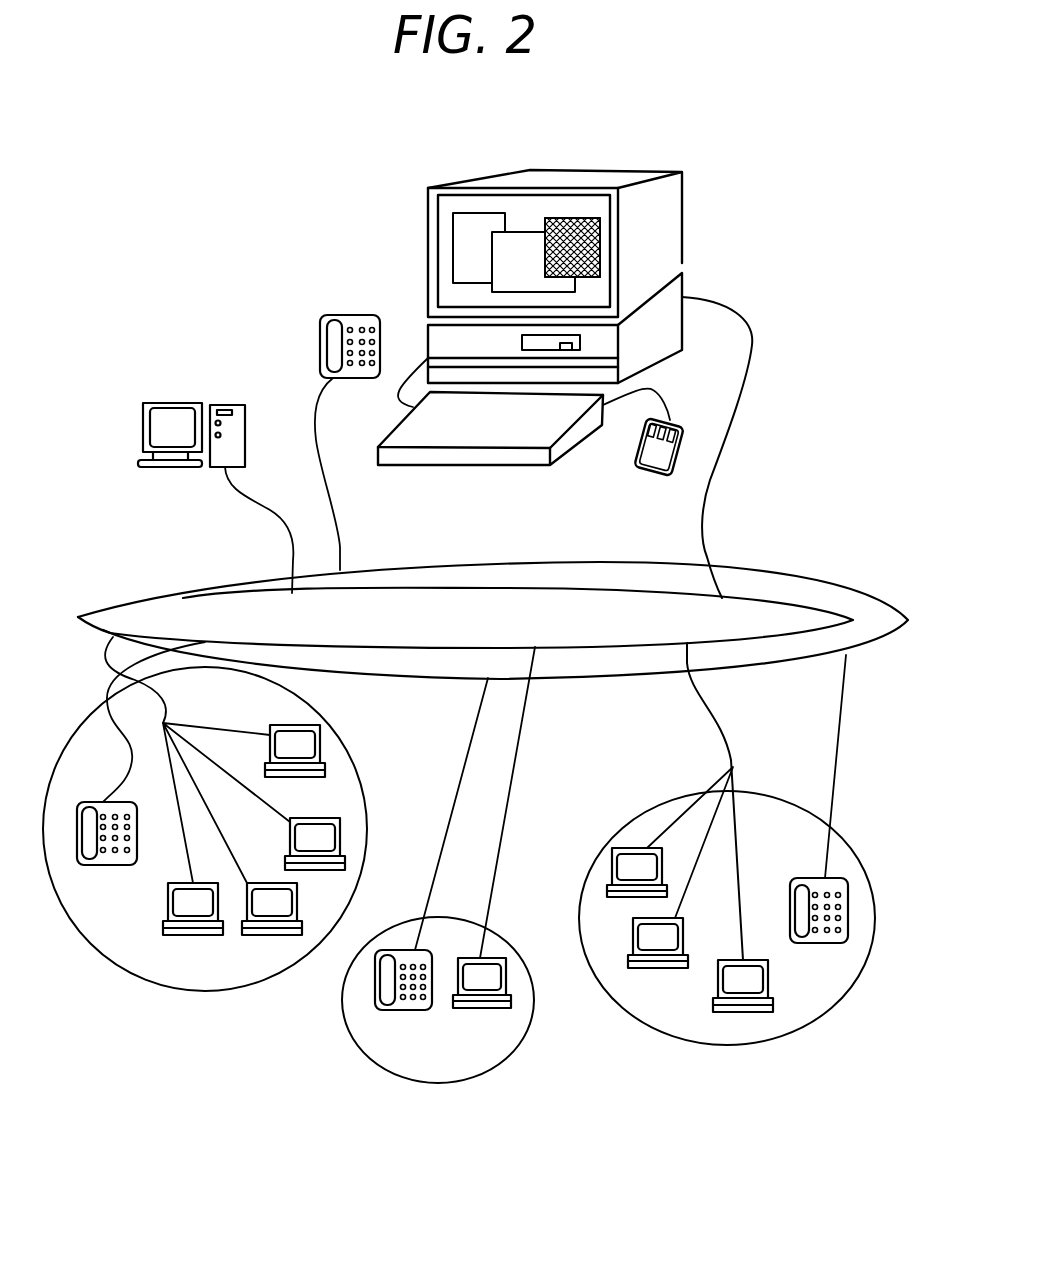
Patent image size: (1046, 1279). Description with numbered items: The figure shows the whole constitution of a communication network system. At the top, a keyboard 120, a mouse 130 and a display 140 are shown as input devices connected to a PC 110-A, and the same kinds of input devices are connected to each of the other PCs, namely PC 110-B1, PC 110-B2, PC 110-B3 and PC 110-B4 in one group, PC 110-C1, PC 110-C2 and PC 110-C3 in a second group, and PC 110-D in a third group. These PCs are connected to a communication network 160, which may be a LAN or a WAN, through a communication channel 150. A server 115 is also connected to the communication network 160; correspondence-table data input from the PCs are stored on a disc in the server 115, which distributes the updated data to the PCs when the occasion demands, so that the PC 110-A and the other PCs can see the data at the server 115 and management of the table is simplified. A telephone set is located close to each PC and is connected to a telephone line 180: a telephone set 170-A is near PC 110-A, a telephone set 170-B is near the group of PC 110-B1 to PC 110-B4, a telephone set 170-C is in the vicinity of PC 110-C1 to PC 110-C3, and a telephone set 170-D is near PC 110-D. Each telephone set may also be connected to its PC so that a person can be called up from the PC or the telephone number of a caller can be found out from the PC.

The display 140 is at (683, 202).
The PC 110-A is at (682, 285).
The mouse 130 is at (688, 426).
The keyboard 120 is at (458, 465).
The communication channel 150 is at (710, 477).
The server 115 is at (178, 403).
The telephone set 170-A is at (340, 315).
The communication network 160 is at (783, 637).
The telephone line 180 is at (632, 677).
The PC 110-B1 is at (320, 745).
The PC 110-B2 is at (340, 830).
The PC 110-B3 is at (278, 935).
The PC 110-B4 is at (182, 935).
The telephone set 170-B is at (105, 865).
The telephone set 170-C is at (843, 878).
The PC 110-C1 is at (612, 867).
The PC 110-C2 is at (660, 968).
The PC 110-C3 is at (768, 1012).
The telephone set 170-D is at (402, 1010).
The PC 110-D is at (490, 1008).